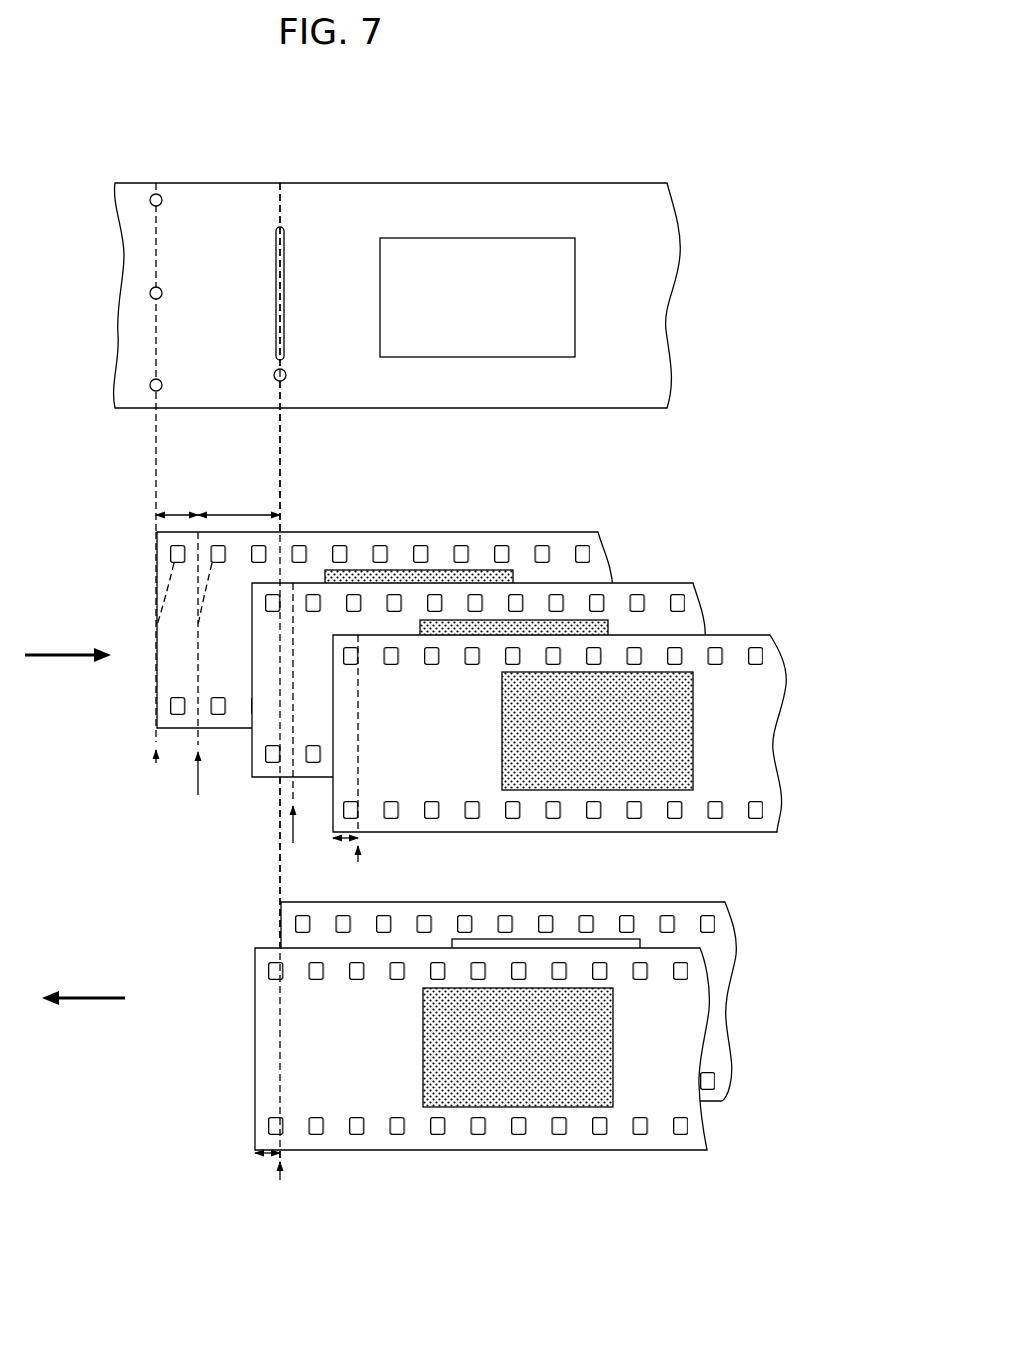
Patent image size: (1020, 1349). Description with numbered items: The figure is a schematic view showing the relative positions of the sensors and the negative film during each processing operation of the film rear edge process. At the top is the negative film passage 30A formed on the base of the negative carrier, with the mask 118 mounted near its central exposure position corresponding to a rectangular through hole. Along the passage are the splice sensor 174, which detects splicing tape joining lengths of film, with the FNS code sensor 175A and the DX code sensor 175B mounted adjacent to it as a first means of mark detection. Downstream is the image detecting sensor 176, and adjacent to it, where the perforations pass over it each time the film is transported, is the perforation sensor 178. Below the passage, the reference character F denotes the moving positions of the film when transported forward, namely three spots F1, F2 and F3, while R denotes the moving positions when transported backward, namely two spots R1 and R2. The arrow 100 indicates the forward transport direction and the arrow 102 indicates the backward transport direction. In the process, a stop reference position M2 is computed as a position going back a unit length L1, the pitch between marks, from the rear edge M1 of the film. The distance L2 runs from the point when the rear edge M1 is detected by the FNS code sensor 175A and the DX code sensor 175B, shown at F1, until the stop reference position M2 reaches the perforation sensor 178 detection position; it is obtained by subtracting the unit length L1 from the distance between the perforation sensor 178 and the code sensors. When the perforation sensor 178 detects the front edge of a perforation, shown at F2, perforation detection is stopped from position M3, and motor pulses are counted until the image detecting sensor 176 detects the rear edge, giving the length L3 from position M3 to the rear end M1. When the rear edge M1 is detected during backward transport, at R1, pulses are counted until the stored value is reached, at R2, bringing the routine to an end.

The negative film passage 30A is at (524, 182).
The mask 118 is at (450, 237).
The splice sensor 174 is at (160, 287).
The FNS code sensor 175A is at (151, 196).
The DX code sensor 175B is at (151, 390).
The image detecting sensor 176 is at (282, 226).
The perforation sensor 178 is at (284, 381).
The forward moving position F is at (515, 663).
The first forward position F1 is at (598, 533).
The second forward position F2 is at (694, 584).
The third forward position F3 is at (830, 835).
The backward moving position R is at (565, 1047).
The first backward position R1 is at (722, 1102).
The second backward position R2 is at (523, 1072).
The unit length L1 is at (177, 501).
The distance L2 is at (239, 501).
The length L3 is at (342, 844).
The rear edge M1 is at (161, 769).
The stop reference position M2 is at (252, 807).
The perforation detection stop position M3 is at (328, 1028).
The forward transport arrow 100 is at (68, 653).
The backward transport arrow 102 is at (78, 996).